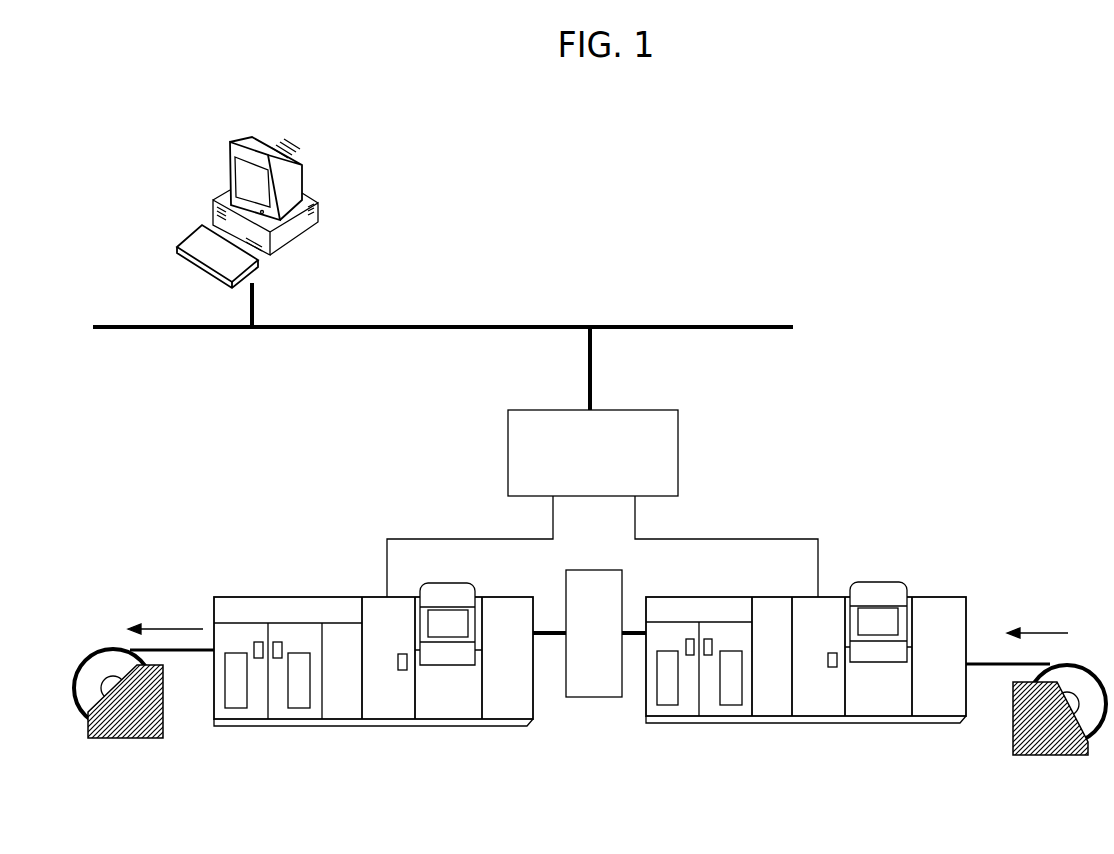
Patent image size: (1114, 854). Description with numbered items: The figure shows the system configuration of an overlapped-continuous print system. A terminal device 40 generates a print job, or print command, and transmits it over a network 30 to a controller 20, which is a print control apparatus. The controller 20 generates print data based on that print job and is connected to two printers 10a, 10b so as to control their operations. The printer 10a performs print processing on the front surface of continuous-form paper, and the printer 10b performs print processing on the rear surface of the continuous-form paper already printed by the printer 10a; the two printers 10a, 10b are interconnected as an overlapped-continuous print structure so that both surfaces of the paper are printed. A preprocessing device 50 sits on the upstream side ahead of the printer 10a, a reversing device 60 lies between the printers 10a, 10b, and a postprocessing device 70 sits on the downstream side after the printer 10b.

The printer 10a is at (803, 722).
The printer 10b is at (367, 725).
The controller 20 is at (678, 450).
The network 30 is at (682, 326).
The terminal device 40 is at (305, 168).
The preprocessing device 50 is at (1047, 755).
The reversing device 60 is at (593, 697).
The postprocessing device 70 is at (132, 738).